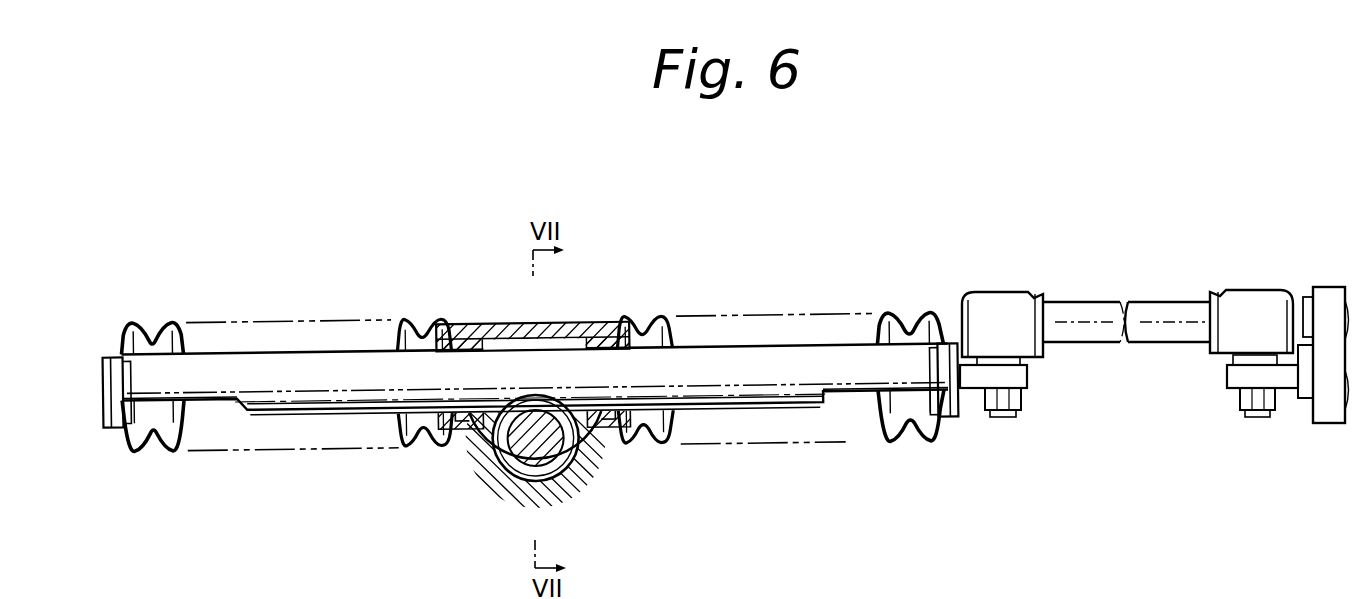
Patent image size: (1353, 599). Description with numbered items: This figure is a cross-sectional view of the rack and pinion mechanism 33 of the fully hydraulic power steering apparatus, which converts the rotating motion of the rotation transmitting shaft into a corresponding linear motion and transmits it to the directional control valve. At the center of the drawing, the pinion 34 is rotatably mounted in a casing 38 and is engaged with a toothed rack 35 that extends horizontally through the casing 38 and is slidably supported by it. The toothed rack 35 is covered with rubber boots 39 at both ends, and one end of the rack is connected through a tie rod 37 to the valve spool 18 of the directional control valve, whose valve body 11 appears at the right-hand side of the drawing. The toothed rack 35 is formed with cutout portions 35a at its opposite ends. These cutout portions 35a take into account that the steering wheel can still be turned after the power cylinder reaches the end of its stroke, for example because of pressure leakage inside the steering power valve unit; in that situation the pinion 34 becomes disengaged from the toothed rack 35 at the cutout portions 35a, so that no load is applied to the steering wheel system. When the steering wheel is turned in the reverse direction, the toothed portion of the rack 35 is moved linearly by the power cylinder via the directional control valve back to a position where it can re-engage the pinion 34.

The valve body 11 is at (1316, 292).
The valve spool 18 is at (1306, 404).
The rack and pinion mechanism 33 is at (592, 312).
The pinion 34 is at (540, 468).
The toothed rack 35 is at (732, 390).
The cutout portions 35a is at (236, 408).
The tie rod 37 is at (1072, 305).
The casing 38 is at (580, 480).
The rubber boots 39 is at (404, 448).